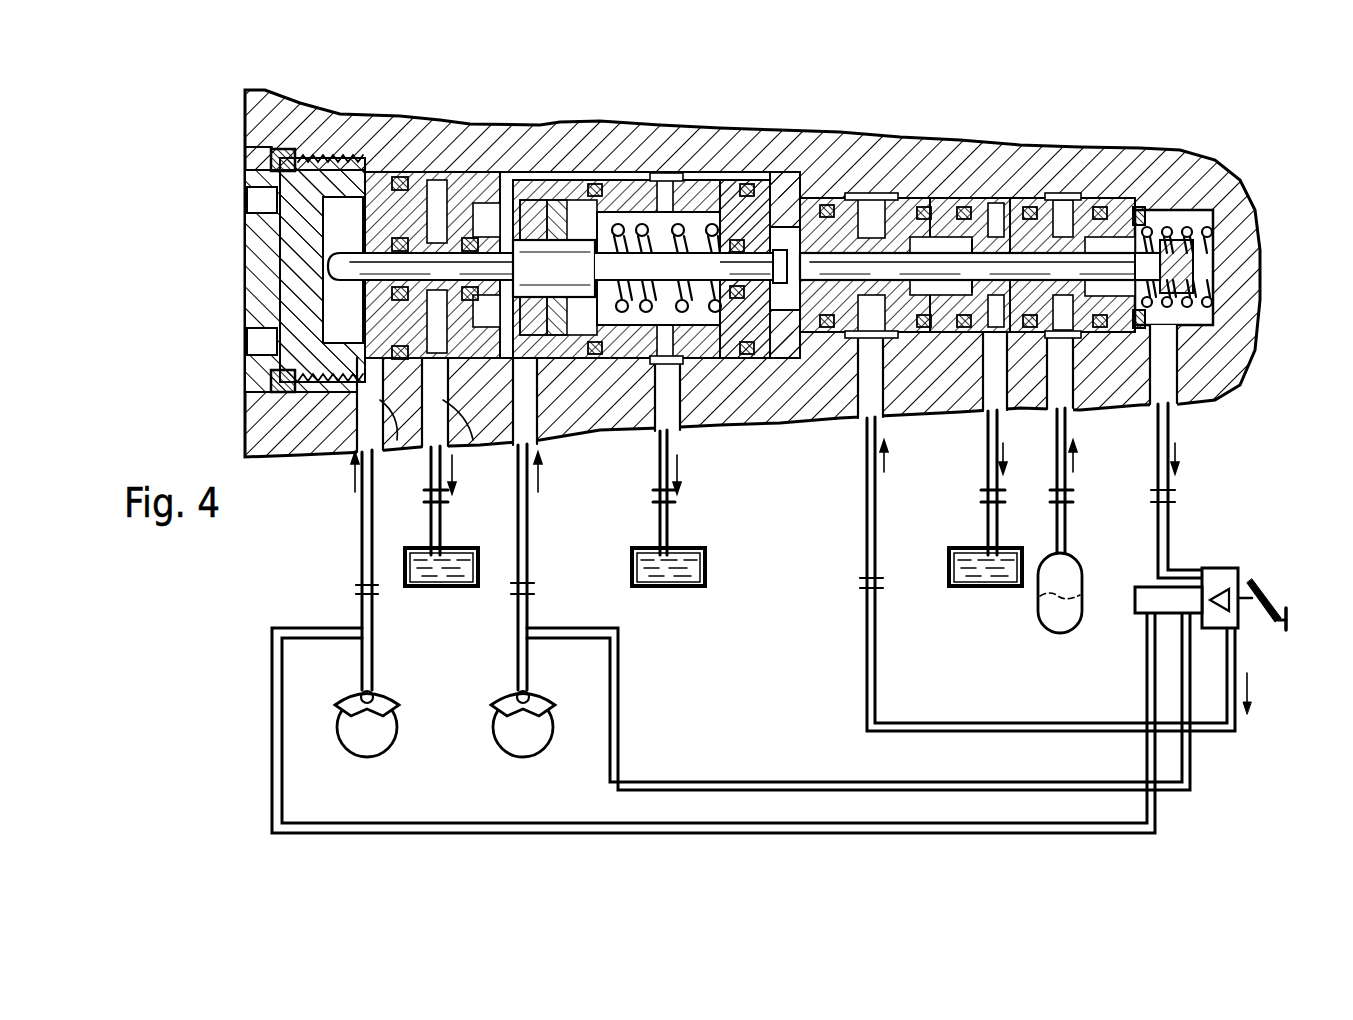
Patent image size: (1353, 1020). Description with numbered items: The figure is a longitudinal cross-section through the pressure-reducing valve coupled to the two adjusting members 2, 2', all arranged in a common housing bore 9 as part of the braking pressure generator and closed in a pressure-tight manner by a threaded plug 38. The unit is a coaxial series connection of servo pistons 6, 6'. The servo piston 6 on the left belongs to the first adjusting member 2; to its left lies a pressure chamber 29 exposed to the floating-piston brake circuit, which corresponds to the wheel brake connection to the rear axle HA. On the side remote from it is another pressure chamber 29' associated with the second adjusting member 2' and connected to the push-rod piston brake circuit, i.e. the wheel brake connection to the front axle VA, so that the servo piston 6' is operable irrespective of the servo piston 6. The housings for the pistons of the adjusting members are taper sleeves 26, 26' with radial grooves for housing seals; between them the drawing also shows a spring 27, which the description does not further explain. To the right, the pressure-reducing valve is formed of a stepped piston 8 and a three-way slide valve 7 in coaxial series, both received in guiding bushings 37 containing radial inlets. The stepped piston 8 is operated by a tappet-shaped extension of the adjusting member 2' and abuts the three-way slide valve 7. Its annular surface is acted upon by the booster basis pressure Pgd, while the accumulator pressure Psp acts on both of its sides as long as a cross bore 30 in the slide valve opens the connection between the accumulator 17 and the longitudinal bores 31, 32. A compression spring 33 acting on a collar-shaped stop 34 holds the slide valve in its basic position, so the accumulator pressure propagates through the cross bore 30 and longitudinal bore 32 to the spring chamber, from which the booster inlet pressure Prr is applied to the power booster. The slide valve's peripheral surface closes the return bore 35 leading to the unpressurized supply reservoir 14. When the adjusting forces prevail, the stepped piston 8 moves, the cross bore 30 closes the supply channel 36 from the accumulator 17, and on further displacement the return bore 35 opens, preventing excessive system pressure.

The first adjusting member 2 is at (752, 258).
The servo piston 6 is at (557, 170).
The pressure chamber 29 is at (318, 225).
The pressure chamber 29' is at (450, 208).
The taper sleeve 26 is at (641, 211).
The taper sleeve 26' is at (585, 196).
The compression spring 27 is at (703, 222).
The housing bore 9 is at (777, 188).
The stepped piston 8 is at (846, 190).
The guiding bushings 37 is at (908, 238).
The three-way slide valve 7 is at (1017, 247).
The cross bore 30 is at (1088, 205).
The longitudinal bore 31 is at (803, 312).
The longitudinal bore 32 is at (1193, 262).
The compression spring 33 is at (1185, 227).
The collar-shaped stop 34 is at (1136, 222).
The threaded plug 38 is at (268, 262).
The return bore 35 is at (957, 427).
The supply channel 36 is at (1107, 425).
The second adjusting member 2' is at (554, 365).
The servo piston 6' is at (657, 371).
The supply reservoir 14 is at (441, 590).
The accumulator 17 is at (1063, 622).
The wheel brake connection to the rear axle HA is at (370, 745).
The wheel brake connection to the front axle VA is at (527, 745).
The booster basis pressure Pgd is at (876, 497).
The accumulator pressure Psp is at (1066, 520).
The booster inlet pressure Prr is at (1169, 520).